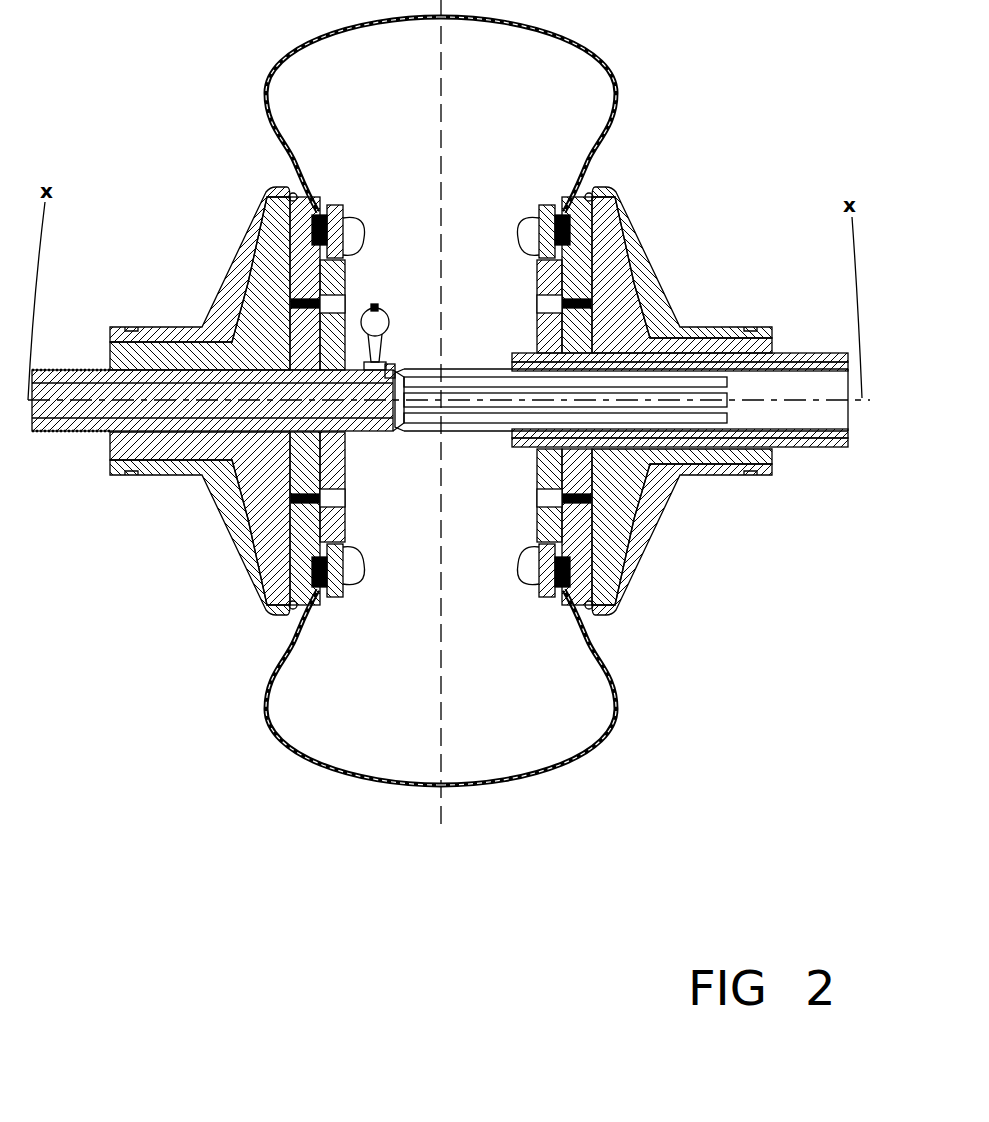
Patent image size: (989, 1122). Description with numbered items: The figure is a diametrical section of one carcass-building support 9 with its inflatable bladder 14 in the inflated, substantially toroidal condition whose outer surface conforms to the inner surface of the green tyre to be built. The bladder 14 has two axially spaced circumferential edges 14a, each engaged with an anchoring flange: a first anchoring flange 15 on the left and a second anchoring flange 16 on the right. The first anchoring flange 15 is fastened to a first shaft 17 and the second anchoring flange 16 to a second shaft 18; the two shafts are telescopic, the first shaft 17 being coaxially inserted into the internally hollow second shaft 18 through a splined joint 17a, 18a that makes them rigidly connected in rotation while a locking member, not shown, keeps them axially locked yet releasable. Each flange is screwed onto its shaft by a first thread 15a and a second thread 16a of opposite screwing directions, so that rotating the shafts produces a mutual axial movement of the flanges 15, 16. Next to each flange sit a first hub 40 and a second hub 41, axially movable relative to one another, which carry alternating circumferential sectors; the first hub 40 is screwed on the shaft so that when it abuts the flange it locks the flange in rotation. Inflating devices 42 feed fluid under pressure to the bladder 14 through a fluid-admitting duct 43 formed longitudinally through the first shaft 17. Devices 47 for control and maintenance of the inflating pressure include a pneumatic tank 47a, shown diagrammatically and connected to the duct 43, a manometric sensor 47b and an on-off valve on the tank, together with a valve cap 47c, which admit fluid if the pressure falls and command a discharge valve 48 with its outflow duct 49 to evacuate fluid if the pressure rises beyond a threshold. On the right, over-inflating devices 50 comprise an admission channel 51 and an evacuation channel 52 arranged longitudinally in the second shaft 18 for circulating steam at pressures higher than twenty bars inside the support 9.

The building support 9 is at (662, 183).
The inflatable bladder 14 is at (594, 56).
The circumferential edge 14a is at (322, 203).
The first anchoring flange 15 is at (322, 478).
The first thread 15a is at (352, 440).
The second anchoring flange 16 is at (548, 472).
The second thread 16a is at (518, 442).
The first shaft 17 is at (207, 381).
The splined joint 17a is at (653, 420).
The second shaft 18 is at (620, 402).
The splined joint 18a is at (690, 380).
The first hub 40 is at (267, 507).
The second hub 41 is at (240, 263).
The inflating devices 42 is at (50, 364).
The fluid-admitting duct 43 is at (82, 373).
The devices for control and maintenance of the inflating pressure 47 is at (435, 291).
The pneumatic tank 47a is at (392, 360).
The manometric sensor 47b is at (395, 370).
The valve cap 47c is at (374, 303).
The discharge valve 48 is at (390, 432).
The outflow duct 49 is at (86, 430).
The over-inflating devices 50 is at (680, 391).
The admission channel 51 is at (738, 363).
The evacuation channel 52 is at (800, 447).